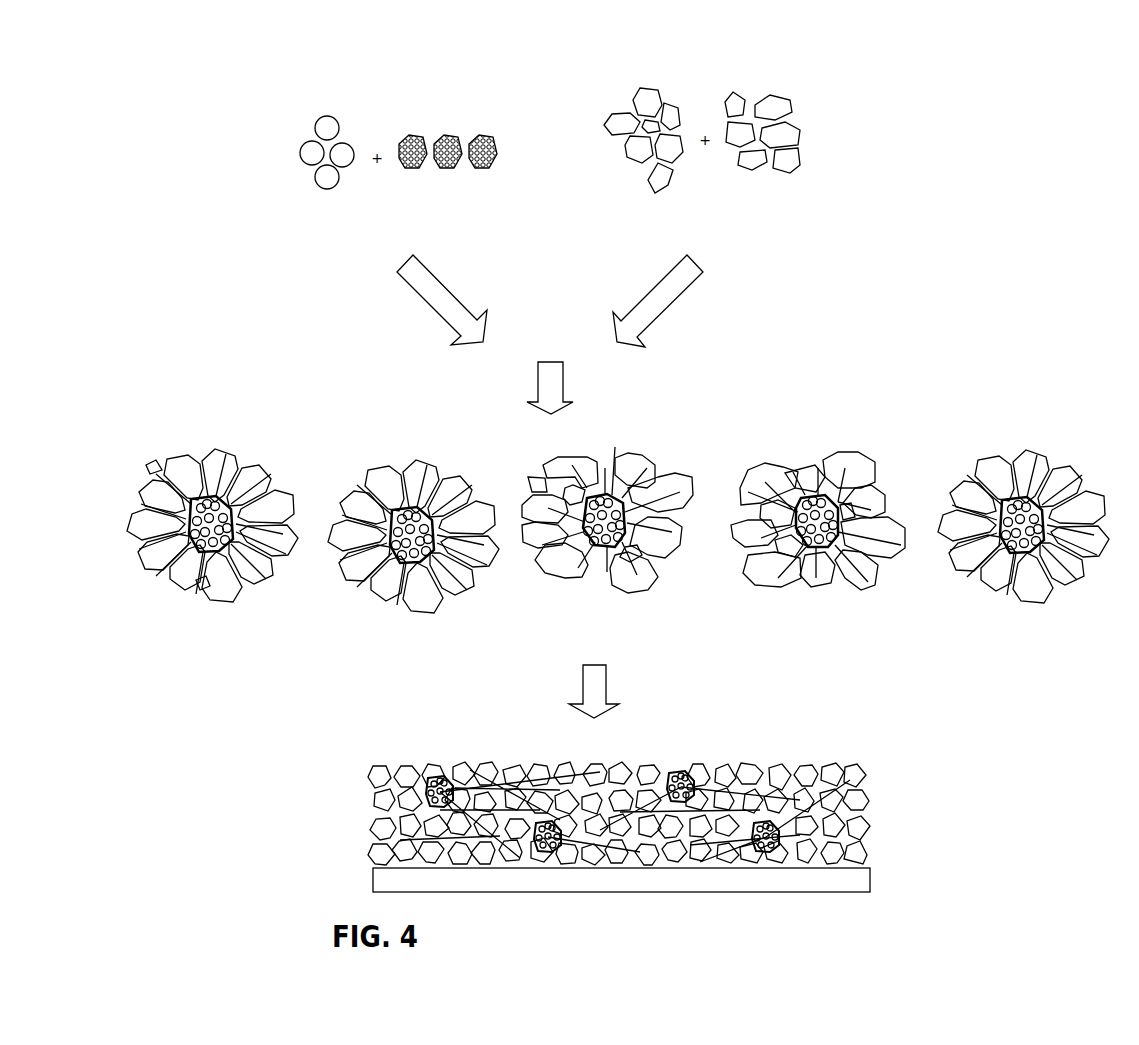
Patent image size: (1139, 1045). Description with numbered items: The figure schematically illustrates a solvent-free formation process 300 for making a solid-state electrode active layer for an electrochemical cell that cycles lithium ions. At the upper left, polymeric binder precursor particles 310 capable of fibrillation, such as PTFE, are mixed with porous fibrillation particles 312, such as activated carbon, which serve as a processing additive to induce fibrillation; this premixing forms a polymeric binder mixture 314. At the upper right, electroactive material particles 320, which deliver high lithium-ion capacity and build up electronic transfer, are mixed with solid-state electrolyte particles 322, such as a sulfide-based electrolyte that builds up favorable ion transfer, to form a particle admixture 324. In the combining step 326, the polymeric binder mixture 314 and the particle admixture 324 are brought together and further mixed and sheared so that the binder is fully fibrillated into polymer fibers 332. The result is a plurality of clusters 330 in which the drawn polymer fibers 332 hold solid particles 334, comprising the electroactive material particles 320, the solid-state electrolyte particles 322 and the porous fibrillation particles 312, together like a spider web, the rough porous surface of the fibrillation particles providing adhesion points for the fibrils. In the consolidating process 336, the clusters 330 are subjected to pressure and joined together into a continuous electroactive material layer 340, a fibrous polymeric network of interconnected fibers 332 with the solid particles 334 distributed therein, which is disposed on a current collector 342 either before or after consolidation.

The formation process 300 is at (246, 82).
The polymeric binder precursor particles 310 is at (330, 122).
The porous fibrillation particles 312 is at (442, 138).
The polymeric binder mixture 314 is at (500, 183).
The electroactive material particles 320 is at (670, 107).
The solid-state electrolyte particles 322 is at (773, 97).
The particle admixture 324 is at (825, 185).
The combining step 326 is at (552, 362).
The clusters 330 is at (343, 461).
The polymer fibers 332 is at (200, 583).
The solid particles 334 is at (187, 467).
The consolidating process 336 is at (594, 667).
The electroactive material layer 340 is at (628, 762).
The current collector 342 is at (373, 880).